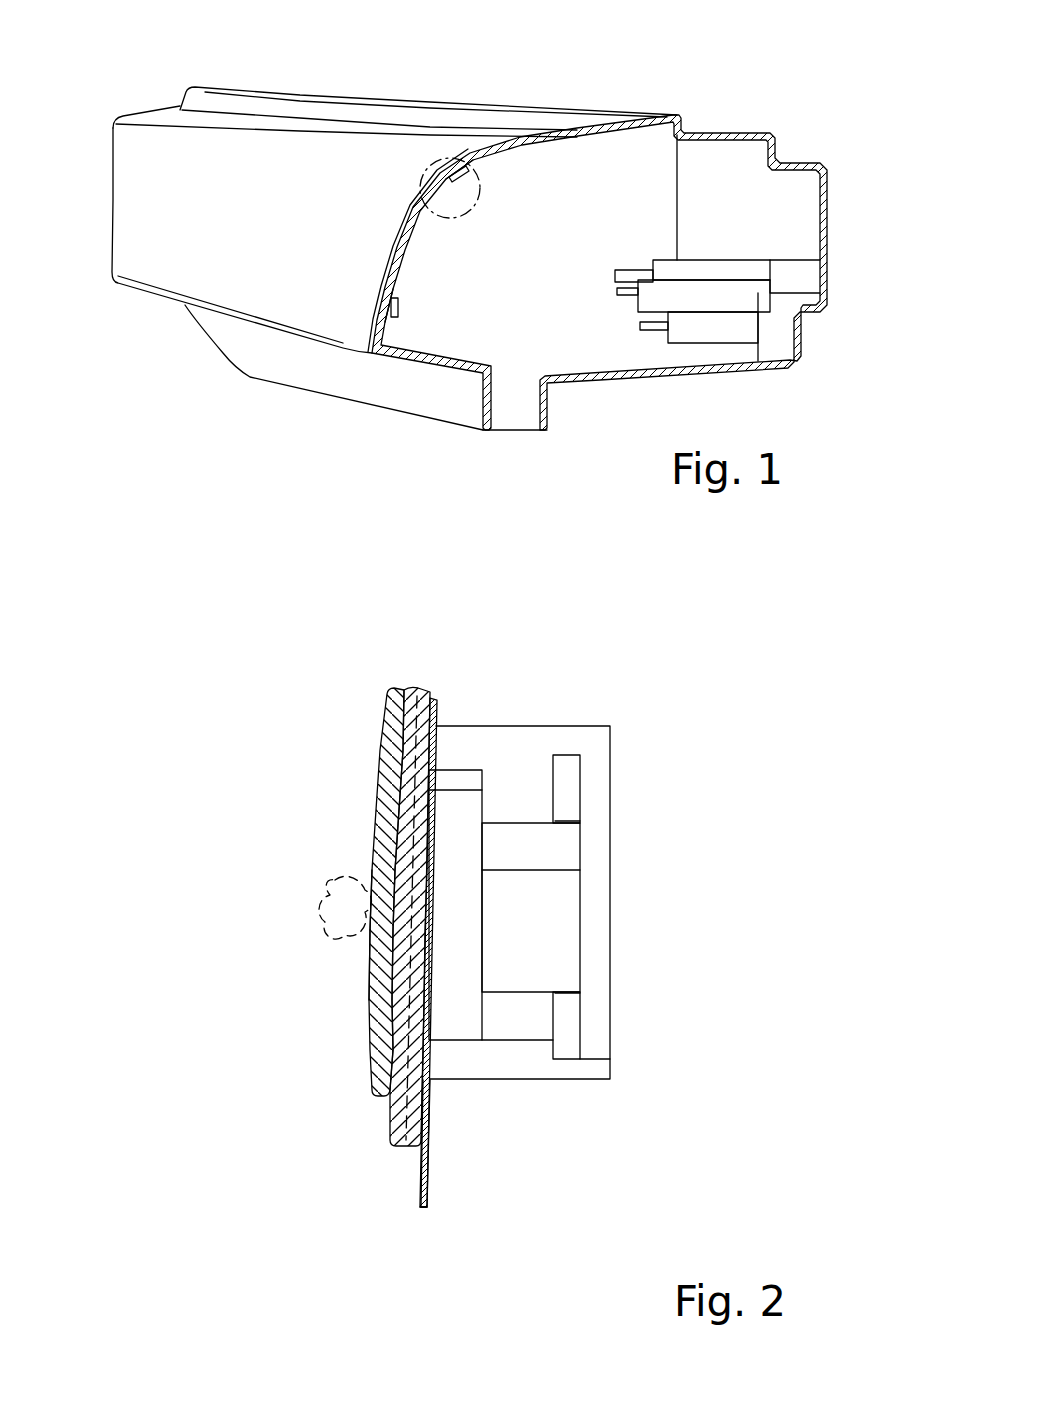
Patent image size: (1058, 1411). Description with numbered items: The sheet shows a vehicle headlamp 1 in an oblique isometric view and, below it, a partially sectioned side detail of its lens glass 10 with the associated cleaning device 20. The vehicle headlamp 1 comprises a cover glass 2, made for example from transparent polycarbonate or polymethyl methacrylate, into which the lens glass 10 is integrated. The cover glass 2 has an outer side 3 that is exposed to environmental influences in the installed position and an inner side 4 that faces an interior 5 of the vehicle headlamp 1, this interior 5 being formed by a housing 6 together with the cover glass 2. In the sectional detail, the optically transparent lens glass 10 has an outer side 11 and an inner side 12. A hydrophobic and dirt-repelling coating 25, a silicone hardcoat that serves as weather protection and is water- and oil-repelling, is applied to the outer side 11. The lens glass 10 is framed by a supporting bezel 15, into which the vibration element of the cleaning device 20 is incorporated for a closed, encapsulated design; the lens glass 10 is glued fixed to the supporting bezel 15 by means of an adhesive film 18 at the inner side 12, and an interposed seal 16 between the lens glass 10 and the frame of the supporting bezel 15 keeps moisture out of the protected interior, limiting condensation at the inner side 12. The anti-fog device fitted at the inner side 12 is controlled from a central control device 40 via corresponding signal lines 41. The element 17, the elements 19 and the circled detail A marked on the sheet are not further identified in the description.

In FIG. 1, the vehicle headlamp 1 is at (147, 334).
In FIG. 2, the vehicle headlamp 1 is at (245, 806).
In FIG. 1, the cover glass 2 is at (165, 177).
In FIG. 2, the cover glass 2 is at (417, 713).
In FIG. 2, the outer side 3 is at (377, 1131).
In FIG. 2, the inner side 4 is at (439, 1126).
In FIG. 1, the interior 5 is at (553, 289).
In FIG. 2, the interior 5 is at (515, 1045).
In FIG. 1, the housing 6 is at (815, 131).
In FIG. 1, the lens glass 10 is at (452, 172).
In FIG. 2, the lens glass 10 is at (350, 977).
In FIG. 1, the outer side 11 is at (458, 188).
In FIG. 2, the outer side 11 is at (542, 908).
In FIG. 2, the inner side 12 is at (527, 877).
In FIG. 2, the supporting bezel 15 is at (450, 921).
In FIG. 2, the seal 16 is at (567, 780).
In FIG. 2, the holder 17 is at (523, 760).
In FIG. 1, the adhesive film 18 is at (458, 194).
In FIG. 2, the adhesive film 18 is at (592, 1052).
In FIG. 2, the boundary 19 is at (433, 788).
In FIG. 1, the cleaning device 20 is at (246, 220).
In FIG. 2, the cleaning device 20 is at (412, 904).
In FIG. 2, the hydrophobic and dirt-repelling coating 25 is at (350, 910).
In FIG. 2, the central control device 40 is at (431, 1212).
In FIG. 2, the signal lines 41 is at (433, 1170).
In FIG. 1, the detail A is at (416, 165).